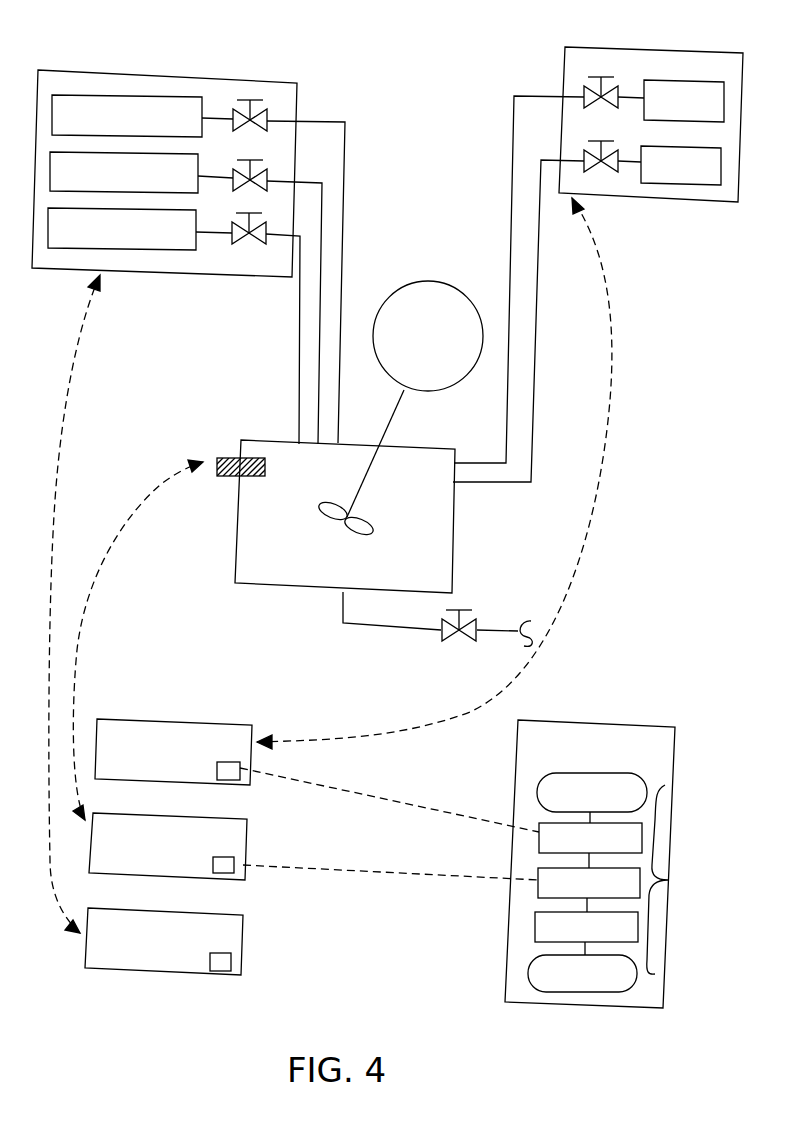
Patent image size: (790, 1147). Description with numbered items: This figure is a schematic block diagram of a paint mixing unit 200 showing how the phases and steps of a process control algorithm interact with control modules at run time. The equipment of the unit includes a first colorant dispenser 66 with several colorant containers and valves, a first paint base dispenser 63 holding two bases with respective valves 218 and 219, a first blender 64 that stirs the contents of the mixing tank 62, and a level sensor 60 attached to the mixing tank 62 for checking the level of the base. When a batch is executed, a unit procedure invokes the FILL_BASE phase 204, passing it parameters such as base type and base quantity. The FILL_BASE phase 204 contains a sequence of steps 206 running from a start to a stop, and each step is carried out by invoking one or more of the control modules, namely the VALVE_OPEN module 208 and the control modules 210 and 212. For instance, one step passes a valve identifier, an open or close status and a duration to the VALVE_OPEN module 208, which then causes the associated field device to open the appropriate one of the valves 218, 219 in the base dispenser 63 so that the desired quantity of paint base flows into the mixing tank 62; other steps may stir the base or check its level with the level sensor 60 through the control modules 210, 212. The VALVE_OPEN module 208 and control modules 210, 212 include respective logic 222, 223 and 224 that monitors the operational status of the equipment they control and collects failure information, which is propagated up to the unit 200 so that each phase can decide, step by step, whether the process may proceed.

The paint mixing unit 200 is at (421, 92).
The first colorant dispenser 66 is at (217, 78).
The first paint base dispenser 63 is at (669, 50).
The valve 219 is at (583, 95).
The valve 218 is at (597, 173).
The first blender 64 is at (434, 283).
The mixing tank 62 is at (345, 443).
The level sensor 60 is at (224, 457).
The VALVE_OPEN module 208 is at (213, 720).
The logic 222 is at (246, 766).
The control module 210 is at (248, 822).
The logic 223 is at (240, 860).
The control module 212 is at (195, 975).
The logic 224 is at (236, 962).
The FILL_BASE phase 204 is at (645, 726).
The steps 206 is at (670, 881).